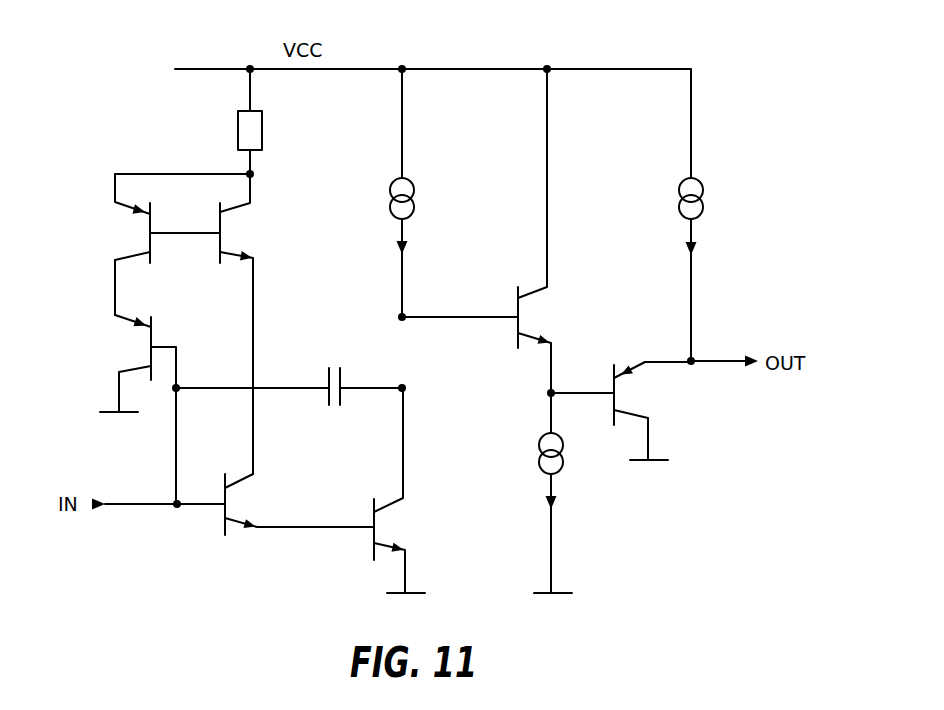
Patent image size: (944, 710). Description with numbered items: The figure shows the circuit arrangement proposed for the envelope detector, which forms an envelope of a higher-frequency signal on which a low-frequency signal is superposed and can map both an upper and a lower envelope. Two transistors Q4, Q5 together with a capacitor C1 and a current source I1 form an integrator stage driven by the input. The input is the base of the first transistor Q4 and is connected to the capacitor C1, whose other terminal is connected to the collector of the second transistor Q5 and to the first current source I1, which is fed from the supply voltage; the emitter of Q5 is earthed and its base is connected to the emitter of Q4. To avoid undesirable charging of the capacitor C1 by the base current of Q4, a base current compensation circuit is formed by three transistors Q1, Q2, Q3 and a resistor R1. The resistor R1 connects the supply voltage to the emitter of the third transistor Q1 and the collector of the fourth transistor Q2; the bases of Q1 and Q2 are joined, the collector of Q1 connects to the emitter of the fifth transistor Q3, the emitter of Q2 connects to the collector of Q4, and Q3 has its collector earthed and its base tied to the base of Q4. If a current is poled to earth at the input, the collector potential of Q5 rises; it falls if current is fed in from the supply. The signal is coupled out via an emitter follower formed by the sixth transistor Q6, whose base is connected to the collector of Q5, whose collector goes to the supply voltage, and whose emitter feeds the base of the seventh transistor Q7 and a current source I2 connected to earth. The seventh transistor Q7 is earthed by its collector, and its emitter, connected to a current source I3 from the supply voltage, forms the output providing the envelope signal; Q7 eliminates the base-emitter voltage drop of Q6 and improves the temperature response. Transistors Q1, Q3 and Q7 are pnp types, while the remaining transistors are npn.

The resistor R1 is at (266, 121).
The third transistor Q1 is at (124, 244).
The fourth transistor Q2 is at (246, 324).
The fifth transistor Q3 is at (138, 363).
The first transistor Q4 is at (299, 504).
The second transistor Q5 is at (401, 490).
The sixth transistor Q6 is at (543, 231).
The seventh transistor Q7 is at (652, 411).
The capacitor C1 is at (289, 372).
The first current source I1 is at (416, 193).
The current source I2 is at (563, 493).
The current source I3 is at (708, 269).